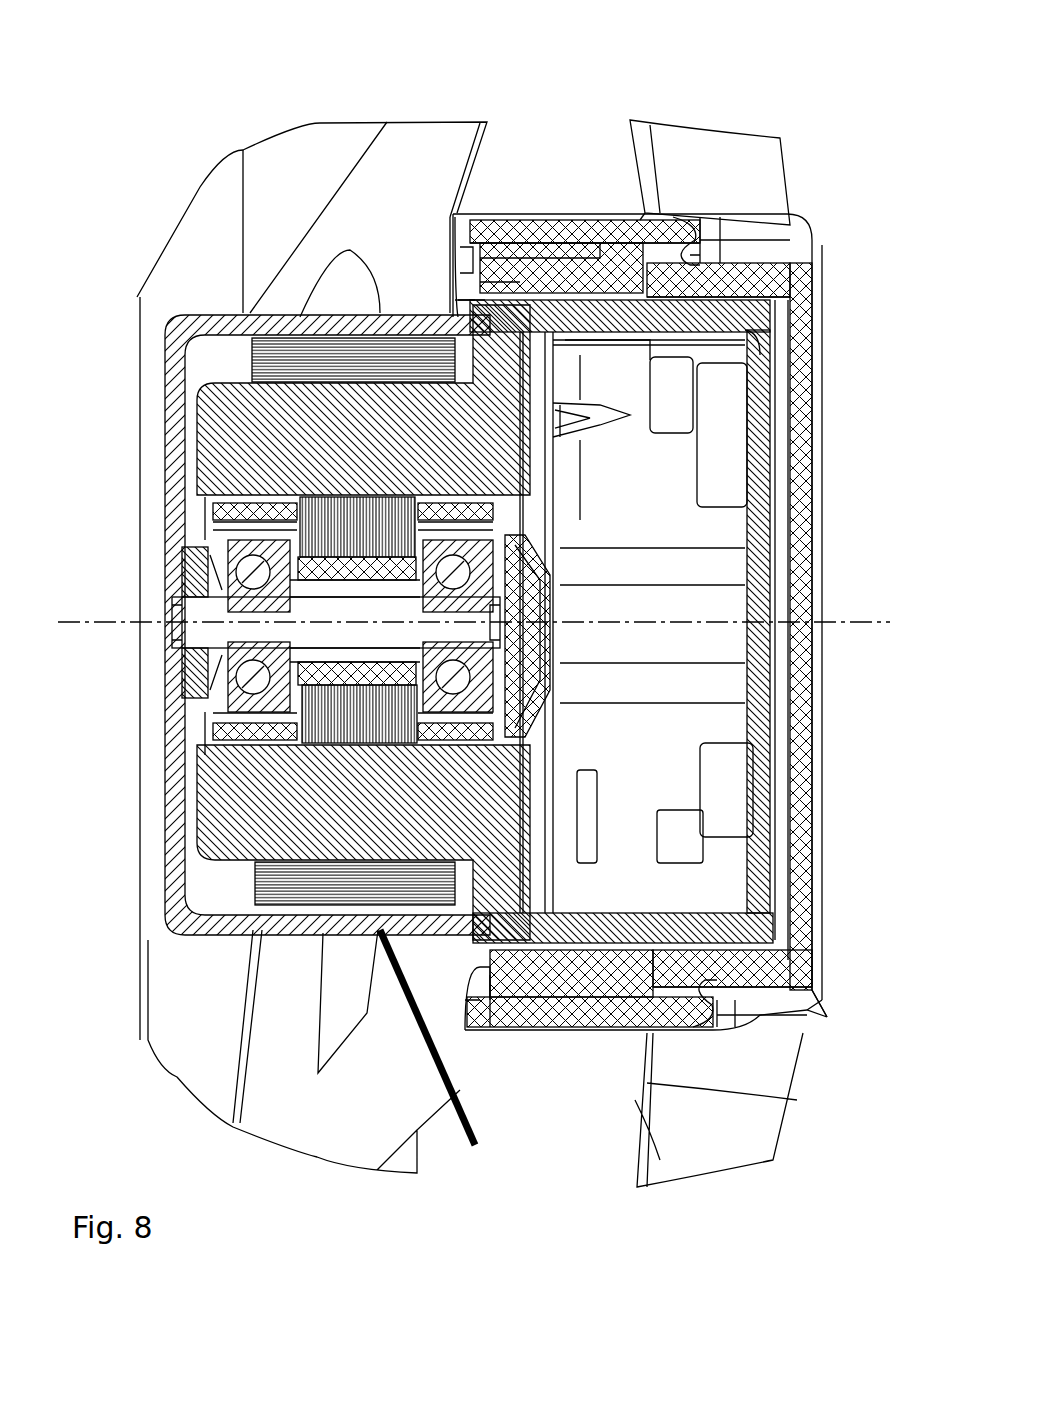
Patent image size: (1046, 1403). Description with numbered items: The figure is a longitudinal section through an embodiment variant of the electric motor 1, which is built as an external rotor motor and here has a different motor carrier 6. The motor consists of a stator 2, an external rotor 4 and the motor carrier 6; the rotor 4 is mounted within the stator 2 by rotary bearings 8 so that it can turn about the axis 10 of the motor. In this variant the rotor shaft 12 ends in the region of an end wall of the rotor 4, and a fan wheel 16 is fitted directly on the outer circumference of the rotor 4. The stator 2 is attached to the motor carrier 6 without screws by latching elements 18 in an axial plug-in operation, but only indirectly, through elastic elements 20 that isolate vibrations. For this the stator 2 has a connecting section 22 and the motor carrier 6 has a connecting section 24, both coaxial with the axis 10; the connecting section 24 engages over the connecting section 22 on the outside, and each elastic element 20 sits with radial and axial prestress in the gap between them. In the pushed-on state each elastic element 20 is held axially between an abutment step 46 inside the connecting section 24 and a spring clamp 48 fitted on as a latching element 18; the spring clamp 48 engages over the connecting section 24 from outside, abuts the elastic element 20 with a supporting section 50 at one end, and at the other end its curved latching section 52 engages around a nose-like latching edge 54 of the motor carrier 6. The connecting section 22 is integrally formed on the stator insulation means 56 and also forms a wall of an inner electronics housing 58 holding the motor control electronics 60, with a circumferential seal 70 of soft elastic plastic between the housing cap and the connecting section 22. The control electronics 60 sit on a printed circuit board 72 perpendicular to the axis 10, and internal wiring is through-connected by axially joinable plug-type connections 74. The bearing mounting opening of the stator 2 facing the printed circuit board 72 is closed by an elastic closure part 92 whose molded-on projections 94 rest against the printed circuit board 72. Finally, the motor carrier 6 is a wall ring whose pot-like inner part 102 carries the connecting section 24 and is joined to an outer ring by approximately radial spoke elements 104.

The electric motor 1 is at (556, 1163).
The stator 2 is at (234, 423).
The rotor 4 is at (182, 925).
The motor carrier 6 is at (800, 228).
The rotary bearings 8 is at (200, 560).
The axis of the motor 10 is at (78, 622).
The rotor shaft 12 is at (207, 632).
The fan wheel 16 is at (332, 130).
The latching elements 18 is at (510, 192).
The elastic elements 20 is at (598, 215).
The connecting section of the stator 22 is at (452, 230).
The connecting section of the motor carrier 24 is at (578, 218).
The abutment step 46 is at (635, 220).
The spring clamp 48 is at (610, 215).
The supporting section 50 is at (470, 985).
The latching section 52 is at (735, 235).
The latching edge 54 is at (684, 218).
The stator insulation means 56 is at (250, 836).
The inner electronics housing 58 is at (790, 326).
The motor control electronics 60 is at (663, 806).
The circumferential seal 70 is at (645, 318).
The printed circuit board 72 is at (558, 735).
The plug-type connections 74 is at (598, 426).
The closure part 92 is at (520, 610).
The molded-on projections 94 is at (528, 660).
The inner part 102 is at (825, 1000).
The spoke elements 104 is at (750, 150).